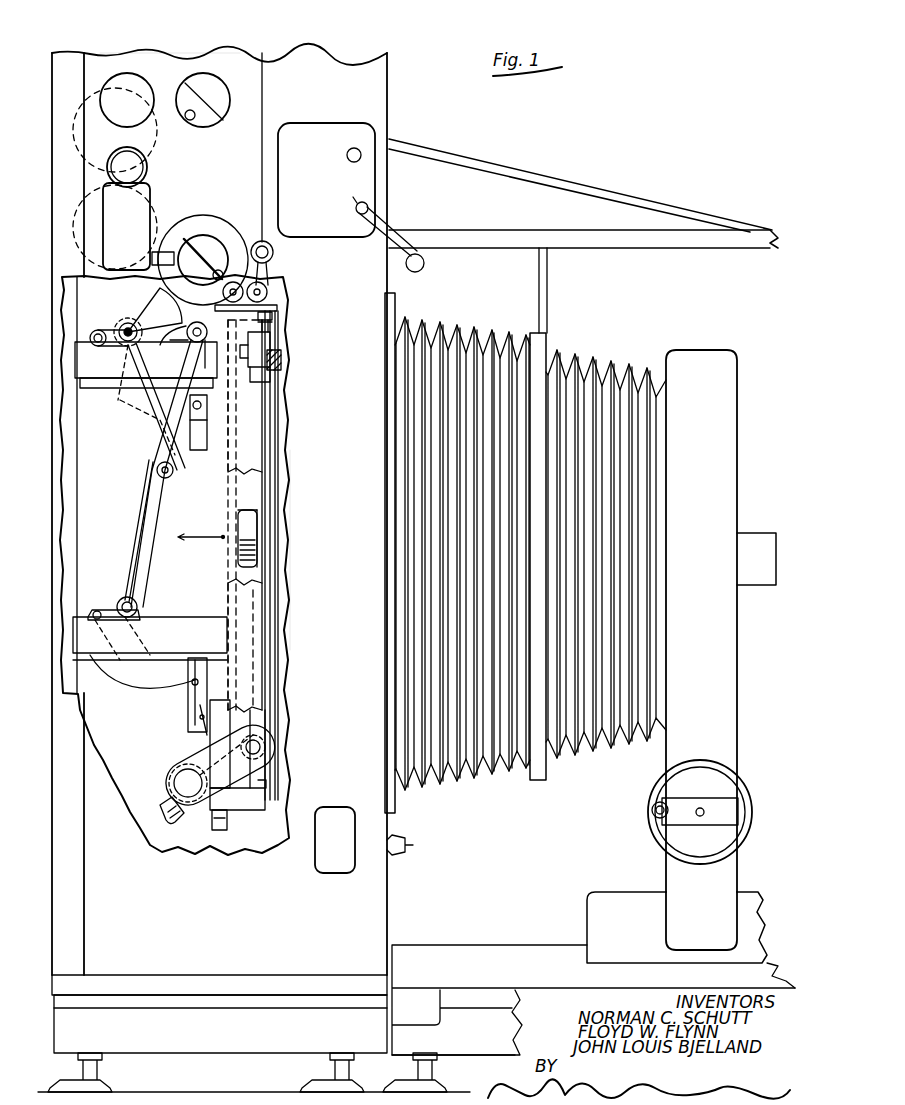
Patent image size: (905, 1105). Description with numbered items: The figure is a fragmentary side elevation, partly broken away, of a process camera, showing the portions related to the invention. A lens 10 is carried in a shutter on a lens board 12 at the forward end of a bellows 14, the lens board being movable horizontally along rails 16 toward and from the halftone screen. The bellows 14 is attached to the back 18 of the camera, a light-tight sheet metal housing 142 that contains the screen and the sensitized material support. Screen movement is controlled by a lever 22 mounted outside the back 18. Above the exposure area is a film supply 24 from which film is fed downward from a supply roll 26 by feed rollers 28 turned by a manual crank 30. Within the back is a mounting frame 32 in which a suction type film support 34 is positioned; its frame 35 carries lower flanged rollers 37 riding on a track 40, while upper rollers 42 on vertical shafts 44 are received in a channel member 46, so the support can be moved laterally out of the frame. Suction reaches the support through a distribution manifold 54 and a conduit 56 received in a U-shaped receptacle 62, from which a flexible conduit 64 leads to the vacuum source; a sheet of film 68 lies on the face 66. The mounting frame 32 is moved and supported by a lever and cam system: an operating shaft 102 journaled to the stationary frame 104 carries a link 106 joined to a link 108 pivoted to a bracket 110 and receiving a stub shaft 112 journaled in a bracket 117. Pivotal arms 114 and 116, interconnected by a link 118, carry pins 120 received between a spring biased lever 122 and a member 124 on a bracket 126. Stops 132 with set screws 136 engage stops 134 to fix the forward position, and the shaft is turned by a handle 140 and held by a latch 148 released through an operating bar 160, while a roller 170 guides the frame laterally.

The lens 10 is at (765, 533).
The lens board 12 is at (722, 428).
The bellows 14 is at (582, 365).
The rails 16 is at (532, 950).
The back of the camera 18 is at (374, 565).
The lever 22 is at (385, 222).
The film supply 24 is at (165, 52).
The supply roll 26 is at (162, 137).
The feed rollers 28 is at (276, 290).
The manual crank 30 is at (210, 243).
The mounting frame 32 is at (202, 511).
The suction type film support 34 is at (265, 565).
The frame of film support 35 is at (265, 535).
The rollers 37 is at (265, 788).
The track 40 is at (265, 797).
The rollers 42 is at (272, 319).
The vertical shafts 44 is at (270, 326).
The channel member 46 is at (272, 313).
The distribution manifold 54 is at (240, 570).
The conduit 56 is at (270, 720).
The U-shaped receptacle 62 is at (172, 768).
The conduit 64 is at (170, 808).
The face 66 is at (272, 410).
The sheet of film 68 is at (273, 478).
The operating shaft 102 is at (126, 326).
The stationary frame 104 is at (95, 358).
The link 106 is at (140, 433).
The link 108 is at (148, 495).
The bracket 110 is at (198, 322).
The stub shaft 112 is at (140, 606).
The pivotal arm 114 is at (150, 305).
The pivotal arm 116 is at (140, 665).
The bracket 117 is at (140, 614).
The link 118 is at (100, 545).
The pin 120 is at (212, 406).
The spring biased lever 122 is at (214, 420).
The member 124 is at (178, 472).
The bracket 126 is at (198, 728).
The stops 132 is at (265, 348).
The stops 134 is at (282, 362).
The set screws 136 is at (280, 379).
The handle 140 is at (160, 450).
The light-tight housing 142 is at (188, 950).
The latch 148 is at (193, 355).
The operating bar 160 is at (105, 386).
The roller 170 is at (212, 835).